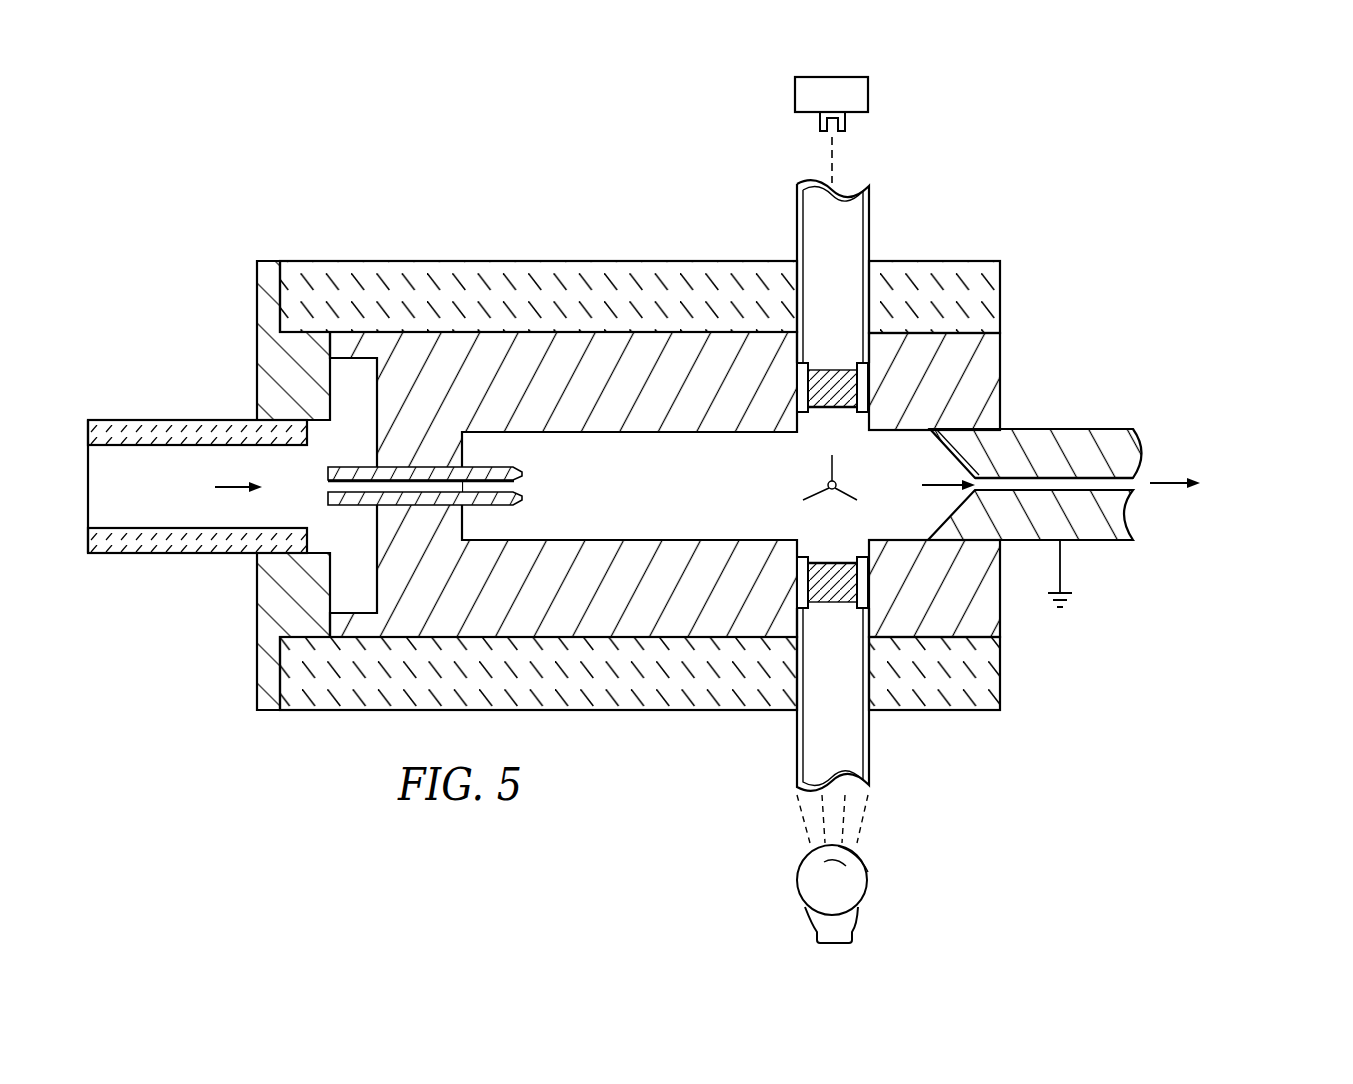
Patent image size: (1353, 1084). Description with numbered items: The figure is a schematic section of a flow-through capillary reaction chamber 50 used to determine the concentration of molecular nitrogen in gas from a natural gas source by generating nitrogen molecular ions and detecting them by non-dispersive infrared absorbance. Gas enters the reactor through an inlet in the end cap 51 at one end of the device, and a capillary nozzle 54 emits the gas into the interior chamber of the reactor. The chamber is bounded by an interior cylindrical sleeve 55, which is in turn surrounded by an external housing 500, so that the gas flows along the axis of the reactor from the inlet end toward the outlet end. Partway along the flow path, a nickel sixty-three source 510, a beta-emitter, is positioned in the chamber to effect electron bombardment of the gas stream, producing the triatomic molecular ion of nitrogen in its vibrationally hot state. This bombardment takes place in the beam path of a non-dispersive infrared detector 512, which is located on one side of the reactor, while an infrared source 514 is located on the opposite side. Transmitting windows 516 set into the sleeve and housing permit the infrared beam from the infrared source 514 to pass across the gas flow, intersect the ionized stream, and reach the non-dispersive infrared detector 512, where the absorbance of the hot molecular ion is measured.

The flow-through capillary reaction chamber 50 is at (558, 180).
The external housing 500 is at (454, 265).
The end cap 51 is at (262, 348).
The interior cylindrical sleeve 55 is at (652, 340).
The capillary nozzle 54 is at (362, 507).
The 63Ni source (β-emitter) 510 is at (827, 482).
The non-dispersive infrared detector 512 is at (869, 94).
The infrared source 514 is at (868, 881).
The transmitting windows 516 is at (823, 370).